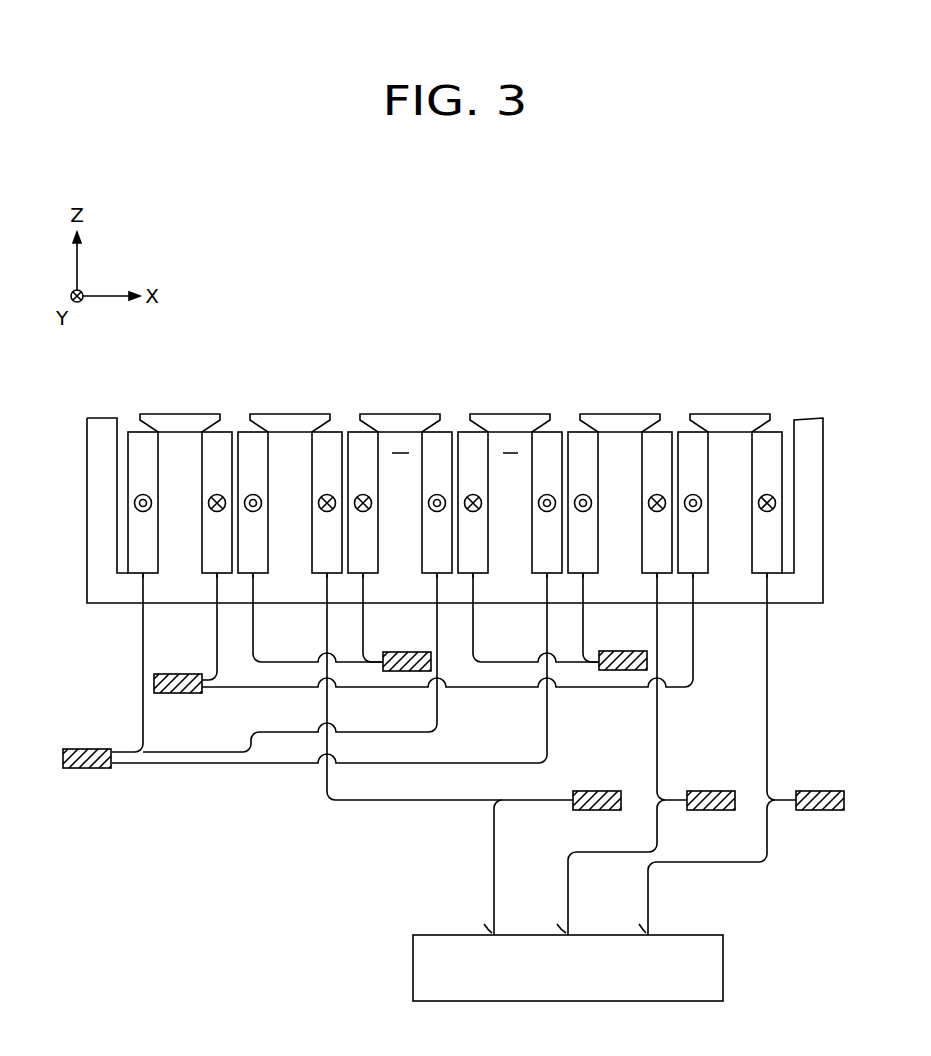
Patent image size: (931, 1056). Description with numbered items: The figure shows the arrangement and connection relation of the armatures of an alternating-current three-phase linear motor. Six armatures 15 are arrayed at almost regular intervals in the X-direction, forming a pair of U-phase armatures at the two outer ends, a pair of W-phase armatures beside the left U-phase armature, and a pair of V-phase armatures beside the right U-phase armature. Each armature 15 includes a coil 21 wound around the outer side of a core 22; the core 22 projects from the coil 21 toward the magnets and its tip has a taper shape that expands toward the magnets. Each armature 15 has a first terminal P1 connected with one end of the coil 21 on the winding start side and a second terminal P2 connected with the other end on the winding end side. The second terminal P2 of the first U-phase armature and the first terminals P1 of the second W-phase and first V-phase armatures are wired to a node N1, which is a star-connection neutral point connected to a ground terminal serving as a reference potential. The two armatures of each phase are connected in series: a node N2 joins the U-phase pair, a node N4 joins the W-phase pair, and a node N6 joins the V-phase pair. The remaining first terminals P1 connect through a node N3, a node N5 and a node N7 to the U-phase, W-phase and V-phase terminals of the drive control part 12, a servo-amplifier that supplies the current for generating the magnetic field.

The drive control part 12 is at (723, 972).
The armature 15 is at (455, 448).
The coil 21 is at (140, 452).
The core 22 is at (178, 430).
The node N1 is at (87, 770).
The node N2 is at (178, 694).
The node N3 is at (822, 790).
The node N4 is at (408, 651).
The node N5 is at (595, 790).
The node N6 is at (625, 650).
The node N7 is at (710, 790).
The first terminal P1 is at (475, 584).
The second terminal P2 is at (433, 584).